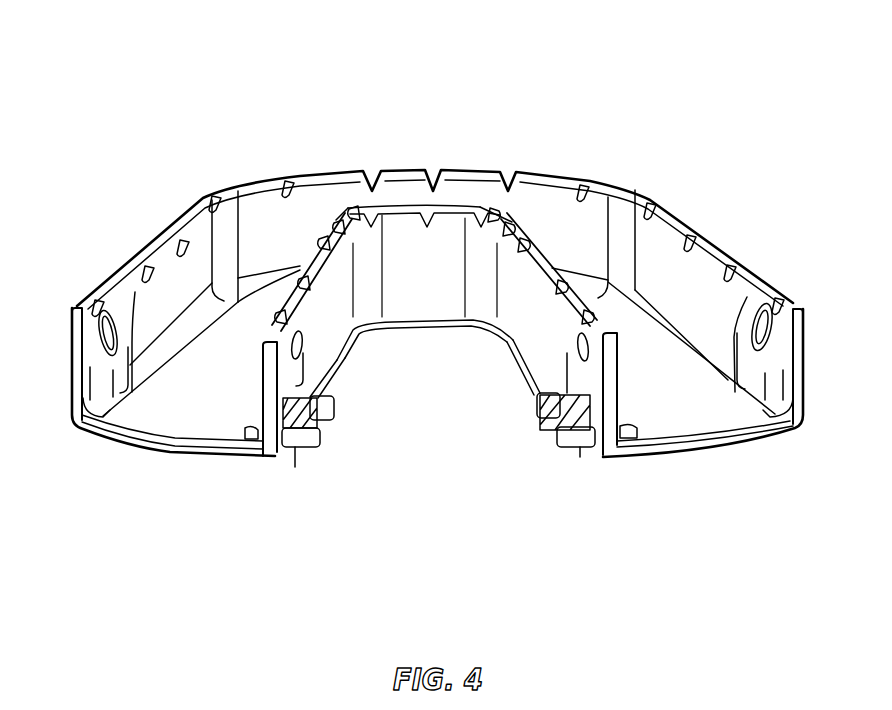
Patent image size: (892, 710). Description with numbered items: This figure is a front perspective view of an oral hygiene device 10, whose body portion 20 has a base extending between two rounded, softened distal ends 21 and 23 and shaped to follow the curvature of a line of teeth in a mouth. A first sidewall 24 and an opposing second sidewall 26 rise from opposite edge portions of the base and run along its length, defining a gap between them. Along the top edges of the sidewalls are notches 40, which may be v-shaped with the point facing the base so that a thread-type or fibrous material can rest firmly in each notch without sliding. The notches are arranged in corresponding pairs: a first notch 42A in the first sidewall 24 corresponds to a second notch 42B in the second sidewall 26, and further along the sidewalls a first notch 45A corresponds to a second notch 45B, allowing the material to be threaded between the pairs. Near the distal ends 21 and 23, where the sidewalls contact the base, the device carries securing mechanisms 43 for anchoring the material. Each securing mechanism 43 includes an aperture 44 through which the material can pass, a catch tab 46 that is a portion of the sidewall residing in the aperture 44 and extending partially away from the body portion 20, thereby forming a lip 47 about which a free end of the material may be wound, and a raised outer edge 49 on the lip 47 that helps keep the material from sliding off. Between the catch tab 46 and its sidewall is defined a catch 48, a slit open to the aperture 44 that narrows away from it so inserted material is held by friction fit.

The oral hygiene device 10 is at (437, 476).
The body portion 20 is at (436, 278).
The distal end 21 is at (170, 450).
The distal end 23 is at (700, 450).
The first sidewall 24 is at (263, 243).
The second sidewall 26 is at (424, 261).
The notches 40 is at (424, 175).
The first notch of first notch pair 42A is at (147, 262).
The second notch of first notch pair 42B is at (348, 335).
The securing mechanism 43 is at (318, 460).
The aperture 44 is at (145, 377).
The first notch of second notch pair 45A is at (175, 232).
The second notch of second notch pair 45B is at (300, 182).
The catch tab 46 is at (320, 415).
The lip 47 is at (310, 440).
The catch 48 is at (140, 330).
The raised outer edge 49 is at (327, 403).